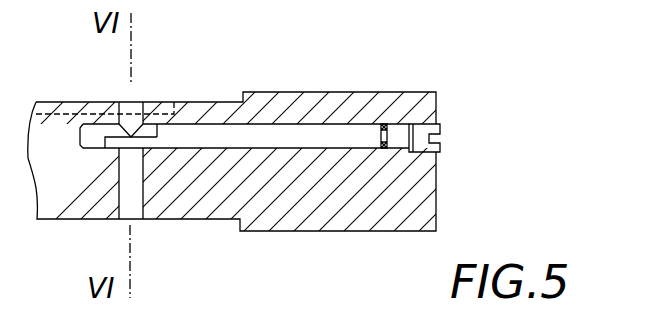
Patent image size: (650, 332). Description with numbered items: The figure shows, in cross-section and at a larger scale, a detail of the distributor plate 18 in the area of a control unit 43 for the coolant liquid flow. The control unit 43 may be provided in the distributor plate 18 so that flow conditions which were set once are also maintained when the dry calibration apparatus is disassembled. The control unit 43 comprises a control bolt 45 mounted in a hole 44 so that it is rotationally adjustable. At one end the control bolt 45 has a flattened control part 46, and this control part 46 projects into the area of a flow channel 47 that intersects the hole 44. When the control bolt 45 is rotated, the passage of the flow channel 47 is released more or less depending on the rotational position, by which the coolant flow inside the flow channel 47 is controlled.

The distributor plate 18 is at (312, 198).
The control unit 43 is at (97, 128).
The hole 44 is at (356, 149).
The control bolt 45 is at (317, 137).
The control part 46 is at (133, 142).
The flow channel 47 is at (130, 205).